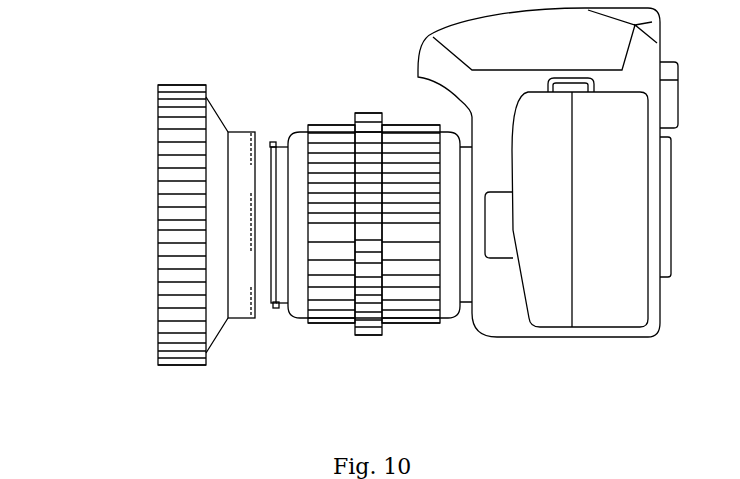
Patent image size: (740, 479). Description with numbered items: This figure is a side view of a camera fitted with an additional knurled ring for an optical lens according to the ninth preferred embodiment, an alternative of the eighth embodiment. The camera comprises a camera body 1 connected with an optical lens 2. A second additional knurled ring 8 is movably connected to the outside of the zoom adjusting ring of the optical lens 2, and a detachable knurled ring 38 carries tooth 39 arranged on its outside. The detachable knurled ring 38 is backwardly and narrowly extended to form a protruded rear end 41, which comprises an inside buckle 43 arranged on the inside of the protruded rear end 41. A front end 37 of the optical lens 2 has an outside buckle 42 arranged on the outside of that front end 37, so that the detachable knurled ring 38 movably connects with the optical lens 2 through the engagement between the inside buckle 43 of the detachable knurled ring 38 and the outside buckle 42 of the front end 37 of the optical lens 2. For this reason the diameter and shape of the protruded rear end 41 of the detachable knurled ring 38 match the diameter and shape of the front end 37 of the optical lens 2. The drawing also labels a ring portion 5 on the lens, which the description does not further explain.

The camera body 1 is at (556, 208).
The optical lens 2 is at (338, 102).
The lens ring 5 is at (412, 120).
The second additional knurled ring 8 is at (385, 338).
The front end of the optical lens 37 is at (268, 323).
The detachable knurled ring 38 is at (152, 252).
The tooth 39 is at (155, 372).
The protruded rear end 41 is at (243, 123).
The outside buckle 42 is at (272, 132).
The inside buckle 43 is at (247, 285).